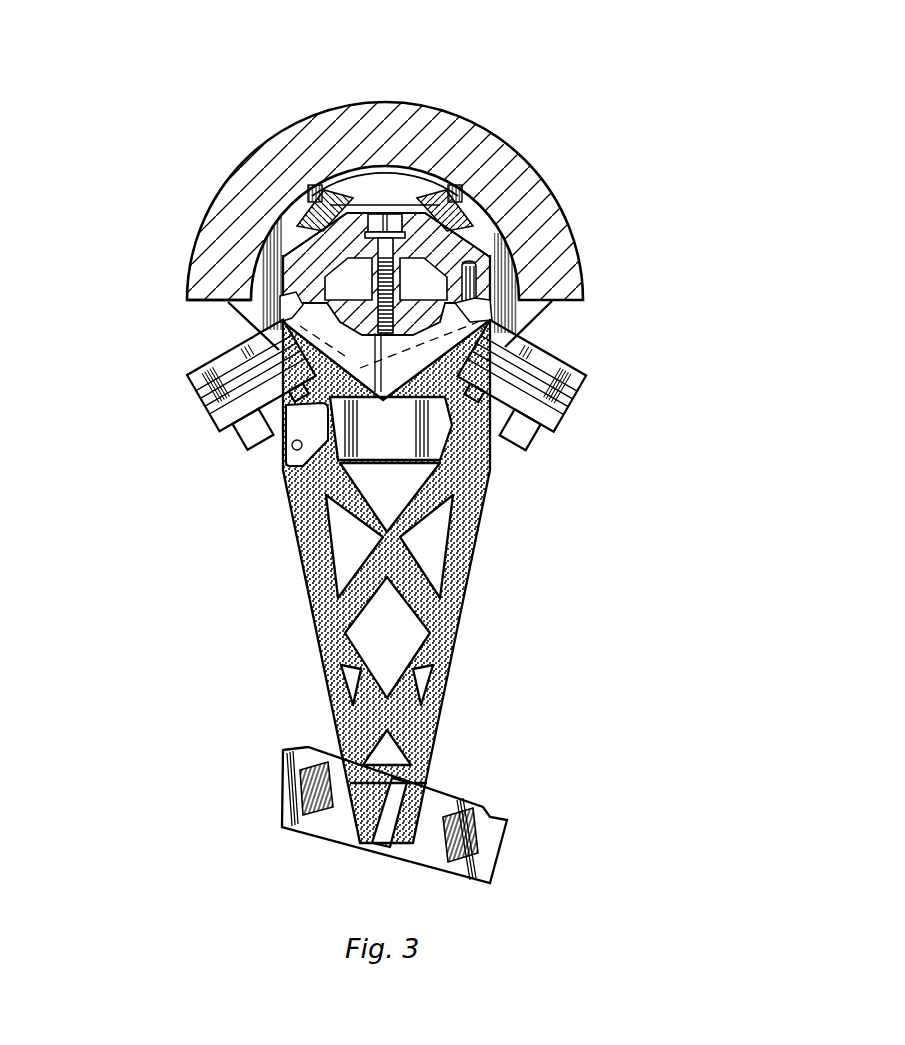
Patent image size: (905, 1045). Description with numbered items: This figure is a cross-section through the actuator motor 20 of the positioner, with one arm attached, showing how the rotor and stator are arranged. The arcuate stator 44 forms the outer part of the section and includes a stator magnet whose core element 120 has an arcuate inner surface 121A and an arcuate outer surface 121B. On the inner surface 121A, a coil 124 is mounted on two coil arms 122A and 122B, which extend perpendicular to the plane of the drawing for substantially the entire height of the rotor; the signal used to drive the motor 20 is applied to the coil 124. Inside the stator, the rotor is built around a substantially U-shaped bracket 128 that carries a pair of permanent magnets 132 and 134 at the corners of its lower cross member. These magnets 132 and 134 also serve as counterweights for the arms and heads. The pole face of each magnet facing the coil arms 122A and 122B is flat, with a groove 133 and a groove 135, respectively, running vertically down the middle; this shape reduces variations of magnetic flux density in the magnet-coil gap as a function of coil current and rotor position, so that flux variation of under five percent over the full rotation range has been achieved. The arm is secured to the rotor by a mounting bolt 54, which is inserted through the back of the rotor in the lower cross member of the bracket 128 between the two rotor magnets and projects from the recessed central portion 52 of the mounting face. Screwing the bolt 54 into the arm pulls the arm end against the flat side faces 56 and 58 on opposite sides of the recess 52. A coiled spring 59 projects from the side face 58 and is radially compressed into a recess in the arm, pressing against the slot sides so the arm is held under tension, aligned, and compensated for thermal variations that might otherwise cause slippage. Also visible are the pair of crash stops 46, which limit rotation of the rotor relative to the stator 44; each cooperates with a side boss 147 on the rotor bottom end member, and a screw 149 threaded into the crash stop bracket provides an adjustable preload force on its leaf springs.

The actuator motor 20 is at (353, 56).
The stator 44 is at (572, 207).
The crash stops 46 is at (206, 383).
The recessed central portion 52 is at (445, 257).
The mounting bolt 54 is at (378, 287).
The flat side face 56 is at (302, 318).
The flat side face 58 is at (481, 298).
The coiled spring 59 is at (478, 272).
The core element 120 is at (410, 180).
The arcuate inner surface 121A is at (262, 256).
The arcuate outer surface 121B is at (190, 267).
The coil arm 122A is at (316, 184).
The coil arm 122B is at (481, 198).
The coil 124 is at (424, 173).
The bracket 128 is at (456, 258).
The permanent magnet 132 is at (288, 211).
The groove 133 is at (285, 192).
The permanent magnet 134 is at (497, 205).
The groove 135 is at (472, 183).
The side boss 147 is at (290, 298).
The screw 149 is at (290, 333).